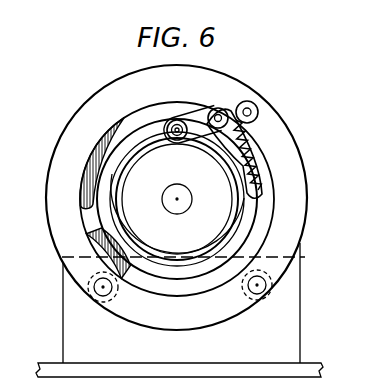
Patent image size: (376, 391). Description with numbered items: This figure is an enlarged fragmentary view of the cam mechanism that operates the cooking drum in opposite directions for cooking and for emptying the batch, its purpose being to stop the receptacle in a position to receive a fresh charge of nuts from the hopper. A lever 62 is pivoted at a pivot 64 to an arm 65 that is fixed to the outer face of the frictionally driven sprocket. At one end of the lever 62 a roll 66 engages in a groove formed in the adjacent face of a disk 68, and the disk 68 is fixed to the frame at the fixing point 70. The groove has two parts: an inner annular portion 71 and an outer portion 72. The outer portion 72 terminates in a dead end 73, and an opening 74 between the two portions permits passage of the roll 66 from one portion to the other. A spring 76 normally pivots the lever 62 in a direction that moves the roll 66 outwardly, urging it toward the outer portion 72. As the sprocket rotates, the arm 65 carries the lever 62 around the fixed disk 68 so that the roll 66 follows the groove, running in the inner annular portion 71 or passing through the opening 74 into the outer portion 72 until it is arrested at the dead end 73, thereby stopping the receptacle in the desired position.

The lever 62 is at (252, 101).
The pivot 64 is at (220, 107).
The arm 65 is at (262, 172).
The roll 66 is at (177, 117).
The disk 68 is at (307, 205).
The frame fixing point 70 is at (110, 302).
The inner annular portion 71 is at (238, 233).
The outer portion 72 is at (253, 252).
The dead end 73 is at (88, 206).
The opening 74 is at (99, 253).
The spring 76 is at (262, 132).